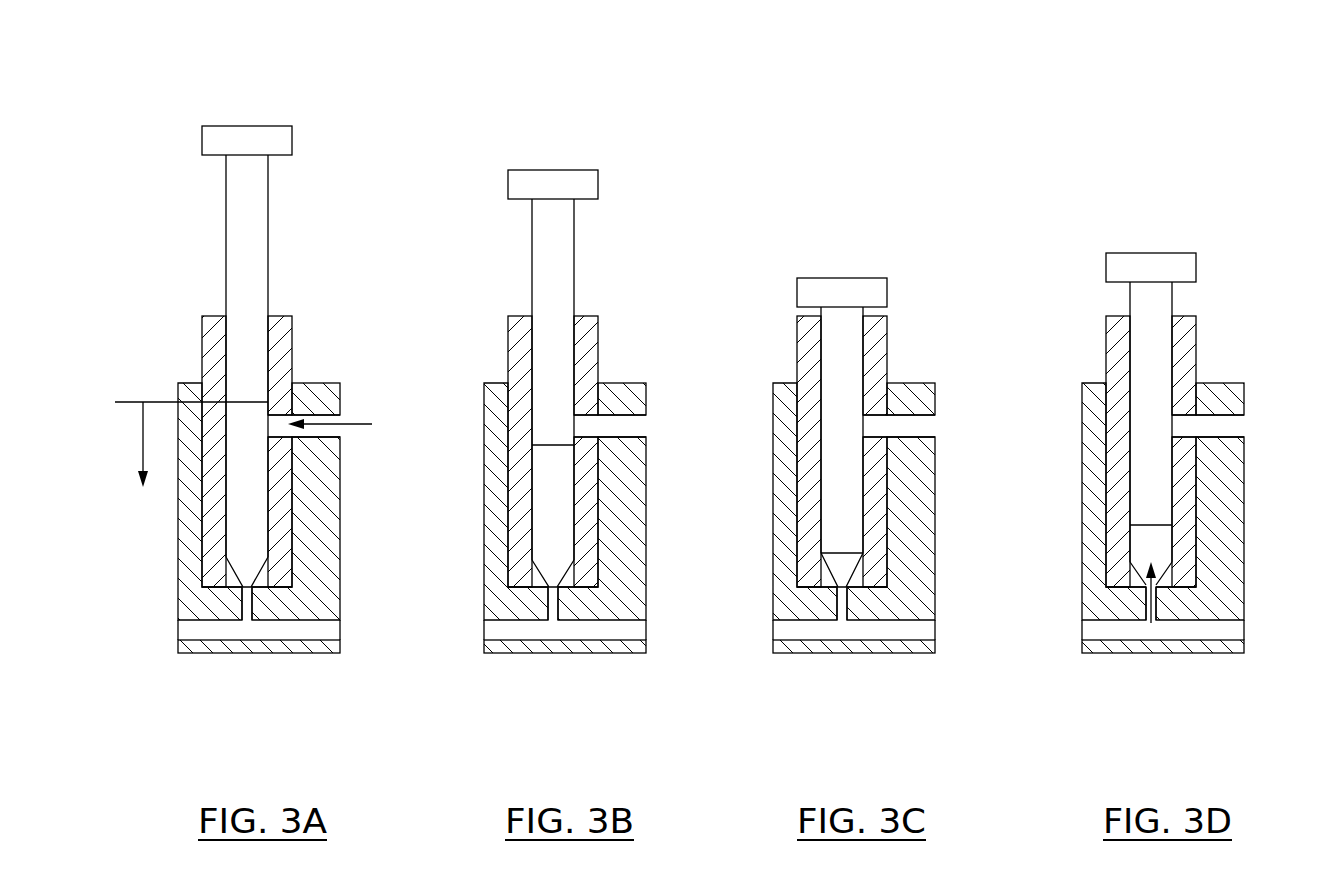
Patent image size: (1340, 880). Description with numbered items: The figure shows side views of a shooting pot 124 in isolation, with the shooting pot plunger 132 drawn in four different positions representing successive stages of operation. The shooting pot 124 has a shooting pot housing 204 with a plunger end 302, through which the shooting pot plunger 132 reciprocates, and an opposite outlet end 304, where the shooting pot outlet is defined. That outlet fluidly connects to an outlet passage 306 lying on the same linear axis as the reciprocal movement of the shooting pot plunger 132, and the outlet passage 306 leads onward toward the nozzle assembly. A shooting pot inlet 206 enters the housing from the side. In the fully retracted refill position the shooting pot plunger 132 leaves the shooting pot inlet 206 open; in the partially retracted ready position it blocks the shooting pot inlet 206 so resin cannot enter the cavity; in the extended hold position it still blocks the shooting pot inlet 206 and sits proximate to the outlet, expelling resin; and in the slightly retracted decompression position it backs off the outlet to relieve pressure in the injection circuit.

In FIG. 3A, the shooting pot 124 is at (250, 396).
In FIG. 3B, the shooting pot 124 is at (601, 408).
In FIG. 3C, the shooting pot 124 is at (864, 429).
In FIG. 3D, the shooting pot 124 is at (1177, 443).
In FIG. 3A, the shooting pot plunger 132 is at (253, 193).
In FIG. 3B, the shooting pot plunger 132 is at (548, 598).
In FIG. 3C, the shooting pot plunger 132 is at (876, 445).
In FIG. 3D, the shooting pot plunger 132 is at (1150, 298).
In FIG. 3A, the shooting pot housing 204 is at (287, 487).
In FIG. 3B, the shooting pot housing 204 is at (520, 495).
In FIG. 3C, the shooting pot housing 204 is at (854, 518).
In FIG. 3D, the shooting pot housing 204 is at (1163, 518).
In FIG. 3A, the shooting pot inlet 206 is at (325, 432).
In FIG. 3B, the shooting pot inlet 206 is at (618, 425).
In FIG. 3C, the shooting pot inlet 206 is at (913, 427).
In FIG. 3D, the shooting pot inlet 206 is at (1215, 422).
In FIG. 3A, the plunger end 302 is at (309, 337).
In FIG. 3B, the plunger end 302 is at (491, 337).
In FIG. 3C, the plunger end 302 is at (904, 337).
In FIG. 3D, the plunger end 302 is at (1088, 337).
In FIG. 3A, the outlet end 304 is at (309, 587).
In FIG. 3B, the outlet end 304 is at (493, 585).
In FIG. 3C, the outlet end 304 is at (902, 587).
In FIG. 3D, the outlet end 304 is at (1091, 585).
In FIG. 3A, the outlet passage 306 is at (243, 603).
In FIG. 3B, the outlet passage 306 is at (556, 605).
In FIG. 3C, the outlet passage 306 is at (840, 603).
In FIG. 3D, the outlet passage 306 is at (1158, 605).